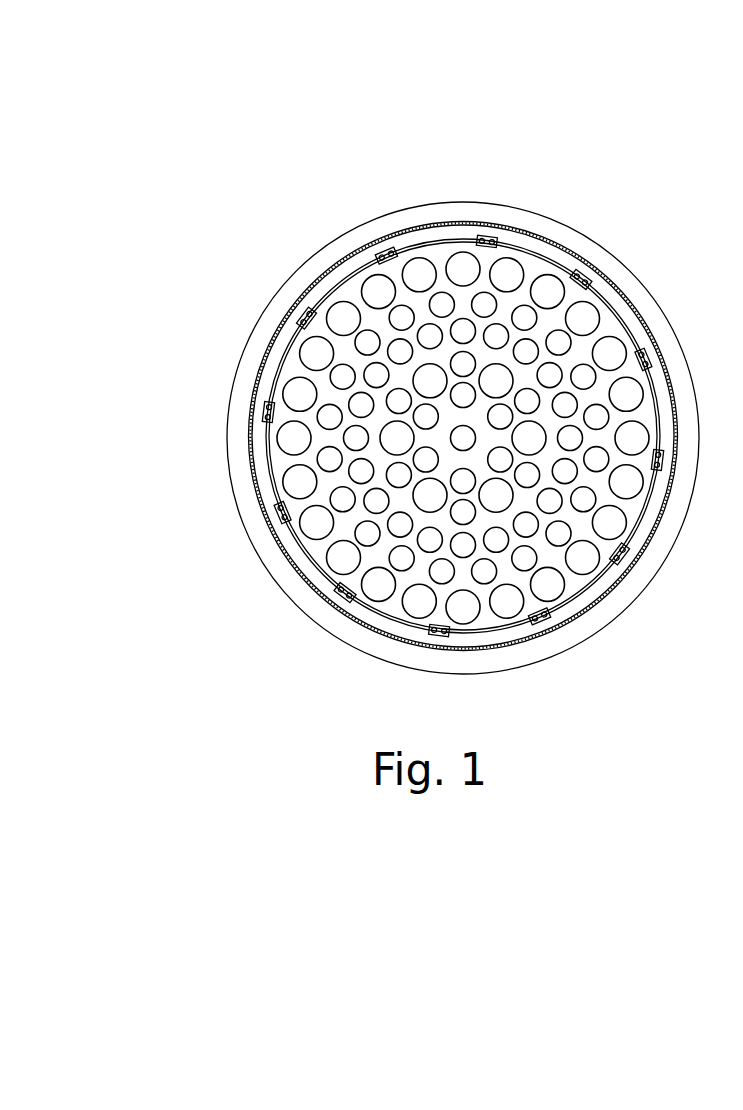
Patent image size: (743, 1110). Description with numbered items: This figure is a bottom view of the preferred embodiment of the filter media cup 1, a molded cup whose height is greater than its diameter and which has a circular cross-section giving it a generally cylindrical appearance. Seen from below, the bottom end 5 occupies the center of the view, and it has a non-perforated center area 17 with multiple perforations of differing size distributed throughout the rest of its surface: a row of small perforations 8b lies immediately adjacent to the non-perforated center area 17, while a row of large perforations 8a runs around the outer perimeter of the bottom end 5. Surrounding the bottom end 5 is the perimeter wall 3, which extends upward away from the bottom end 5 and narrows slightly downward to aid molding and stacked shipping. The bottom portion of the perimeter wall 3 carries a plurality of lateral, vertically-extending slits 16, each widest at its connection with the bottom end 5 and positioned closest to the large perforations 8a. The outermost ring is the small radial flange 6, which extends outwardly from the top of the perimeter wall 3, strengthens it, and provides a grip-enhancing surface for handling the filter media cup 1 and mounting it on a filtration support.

The filter media cup 1 is at (453, 407).
The perimeter wall 3 is at (573, 607).
The bottom end 5 is at (270, 374).
The radial flange 6 is at (650, 562).
The large perforations 8a is at (312, 519).
The small perforations 8b is at (400, 556).
The slits 16 is at (590, 279).
The non-perforated center area 17 is at (462, 428).